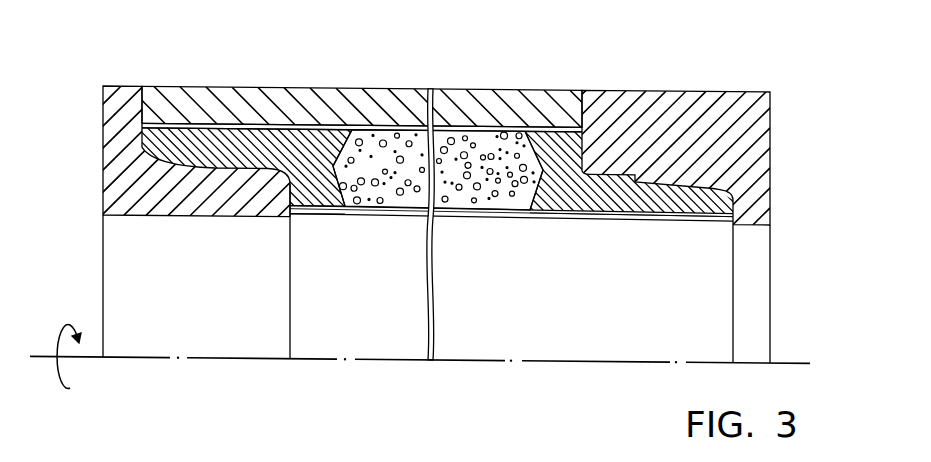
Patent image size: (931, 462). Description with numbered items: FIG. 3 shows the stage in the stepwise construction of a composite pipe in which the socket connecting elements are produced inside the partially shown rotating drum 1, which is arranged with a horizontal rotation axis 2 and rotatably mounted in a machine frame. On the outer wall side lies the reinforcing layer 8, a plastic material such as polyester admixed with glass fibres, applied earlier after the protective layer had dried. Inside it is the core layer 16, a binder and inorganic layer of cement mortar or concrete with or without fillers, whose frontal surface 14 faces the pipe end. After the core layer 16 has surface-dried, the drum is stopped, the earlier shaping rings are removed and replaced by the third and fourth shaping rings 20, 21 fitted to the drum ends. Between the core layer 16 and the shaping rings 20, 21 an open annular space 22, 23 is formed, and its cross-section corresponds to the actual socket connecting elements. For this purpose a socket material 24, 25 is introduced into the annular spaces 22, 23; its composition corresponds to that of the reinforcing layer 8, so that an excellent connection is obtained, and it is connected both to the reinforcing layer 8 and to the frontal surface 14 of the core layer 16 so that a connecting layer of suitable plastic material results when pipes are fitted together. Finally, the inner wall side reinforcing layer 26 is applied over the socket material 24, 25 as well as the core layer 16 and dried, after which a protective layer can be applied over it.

The rotating drum 1 is at (318, 87).
The axis of rotation 2 is at (220, 360).
The reinforcing layer 8 is at (206, 120).
The frontal surface 14 is at (553, 130).
The core layer 16 is at (372, 206).
The third shaping ring 20 is at (118, 108).
The fourth shaping ring 21 is at (770, 127).
The annular space 22 is at (315, 217).
The annular space 23 is at (600, 219).
The socket material 24 is at (216, 150).
The socket material 25 is at (546, 216).
The inner wall side reinforcing layer 26 is at (470, 216).